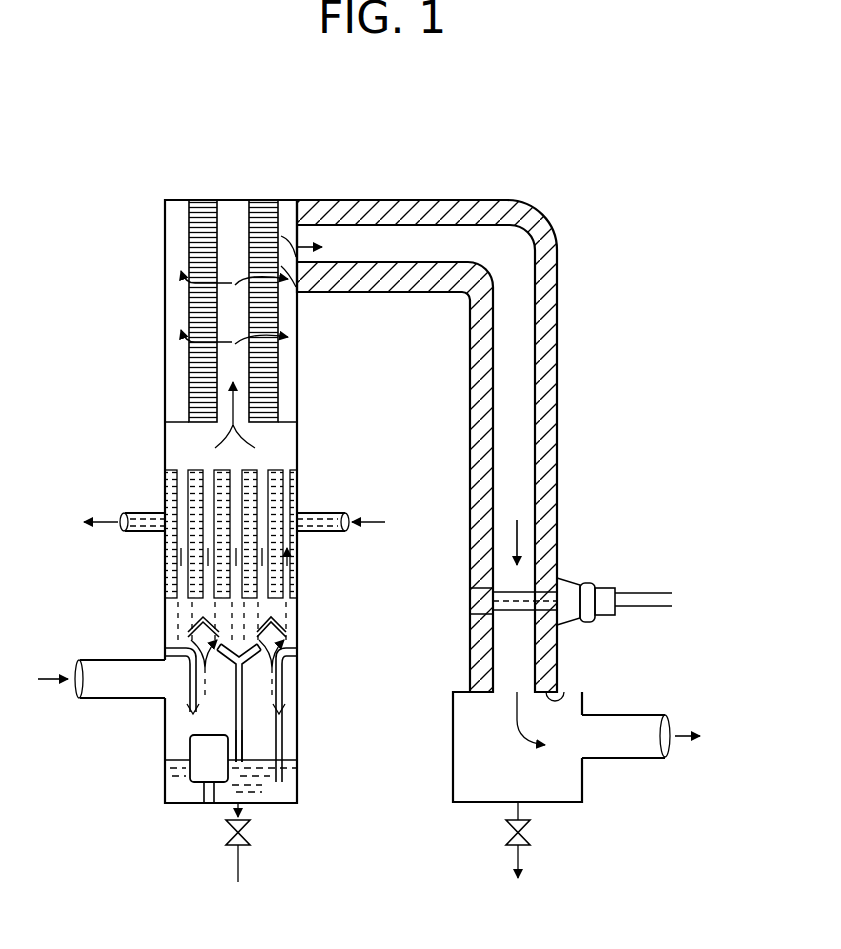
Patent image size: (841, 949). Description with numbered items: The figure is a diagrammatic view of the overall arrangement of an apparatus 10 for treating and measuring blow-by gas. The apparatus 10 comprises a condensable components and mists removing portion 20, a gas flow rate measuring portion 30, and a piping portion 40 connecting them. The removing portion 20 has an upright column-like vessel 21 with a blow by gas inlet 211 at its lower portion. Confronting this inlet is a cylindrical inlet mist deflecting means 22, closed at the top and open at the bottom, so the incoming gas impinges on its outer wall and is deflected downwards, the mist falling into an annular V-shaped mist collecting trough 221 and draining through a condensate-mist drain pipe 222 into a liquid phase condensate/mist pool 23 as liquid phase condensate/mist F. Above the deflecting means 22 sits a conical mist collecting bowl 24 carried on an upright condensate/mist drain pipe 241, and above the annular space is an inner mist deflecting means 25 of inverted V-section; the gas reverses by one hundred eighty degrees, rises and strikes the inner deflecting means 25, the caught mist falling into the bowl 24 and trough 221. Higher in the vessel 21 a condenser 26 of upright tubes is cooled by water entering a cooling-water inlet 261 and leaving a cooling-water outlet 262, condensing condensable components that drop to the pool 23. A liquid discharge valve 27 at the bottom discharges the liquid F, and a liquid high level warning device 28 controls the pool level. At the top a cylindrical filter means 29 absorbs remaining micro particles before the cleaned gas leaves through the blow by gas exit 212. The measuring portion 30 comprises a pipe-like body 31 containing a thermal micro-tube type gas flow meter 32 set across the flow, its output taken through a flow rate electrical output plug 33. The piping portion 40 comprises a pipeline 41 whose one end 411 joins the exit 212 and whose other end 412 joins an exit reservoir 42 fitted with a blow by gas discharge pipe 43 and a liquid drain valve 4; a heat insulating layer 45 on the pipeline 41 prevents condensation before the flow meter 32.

The apparatus 10 is at (414, 171).
The condensable components and mists removing portion 20 is at (225, 193).
The vessel 21 is at (297, 410).
The blow by gas inlet 211 is at (152, 663).
The blow by gas exit 212 is at (290, 236).
The inlet mist deflecting means 22 is at (190, 686).
The mist collecting trough 221 is at (186, 712).
The condensate-mist drain pipe 222 is at (290, 720).
The liquid phase condensate/mist pool 23 is at (297, 772).
The mist collecting bowl 24 is at (244, 661).
The condensate/mist drain pipe 241 is at (237, 694).
The inner mist deflecting means 25 is at (292, 628).
The condenser 26 is at (297, 570).
The cooling-water inlet 261 is at (318, 513).
The cooling-water outlet 262 is at (152, 513).
The liquid discharge valve 27 is at (250, 832).
The liquid high level warning device 28 is at (209, 769).
The filter means 29 is at (279, 357).
The gas flow rate measuring portion 30 is at (571, 576).
The pipe-like body 31 is at (470, 598).
The thermal micro-tube type gas flow meter 32 is at (525, 619).
The flow rate electrical output plug 33 is at (605, 620).
The piping portion 40 is at (569, 350).
The pipeline 41 is at (512, 263).
The one end of the pipeline 411 is at (305, 294).
The other end of the pipeline 412 is at (565, 690).
The exit reservoir 42 is at (453, 740).
The blow by gas discharge pipe 43 is at (622, 758).
The heat insulating layer 45 is at (491, 212).
The drain valve 4 is at (528, 832).
The liquid phase condensate/mist F is at (180, 788).